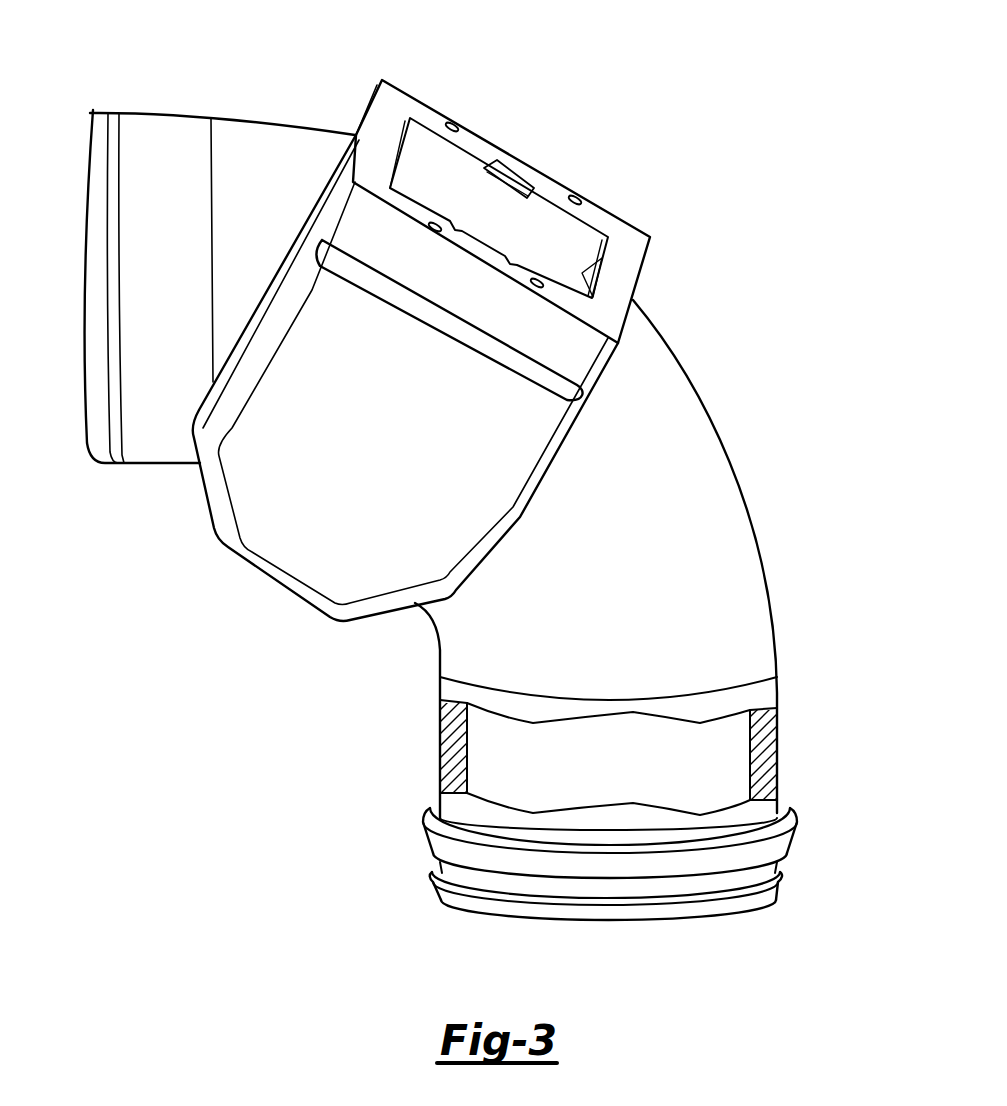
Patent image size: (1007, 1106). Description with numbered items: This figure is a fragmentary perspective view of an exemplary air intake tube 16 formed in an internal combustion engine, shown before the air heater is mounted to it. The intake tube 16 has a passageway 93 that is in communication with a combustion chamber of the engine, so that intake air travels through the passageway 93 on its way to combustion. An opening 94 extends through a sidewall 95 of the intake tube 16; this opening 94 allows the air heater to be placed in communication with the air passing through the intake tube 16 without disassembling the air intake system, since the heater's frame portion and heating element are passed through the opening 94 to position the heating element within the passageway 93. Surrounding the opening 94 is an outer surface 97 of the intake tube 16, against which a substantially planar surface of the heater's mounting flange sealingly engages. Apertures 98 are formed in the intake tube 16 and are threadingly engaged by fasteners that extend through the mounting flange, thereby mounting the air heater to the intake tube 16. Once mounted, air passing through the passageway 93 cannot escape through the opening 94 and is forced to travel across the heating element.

The air intake tube 16 is at (803, 427).
The passageway 93 is at (621, 770).
The opening 94 is at (445, 167).
The sidewall 95 is at (762, 762).
The outer surface 97 is at (400, 100).
The apertures 98 is at (455, 123).